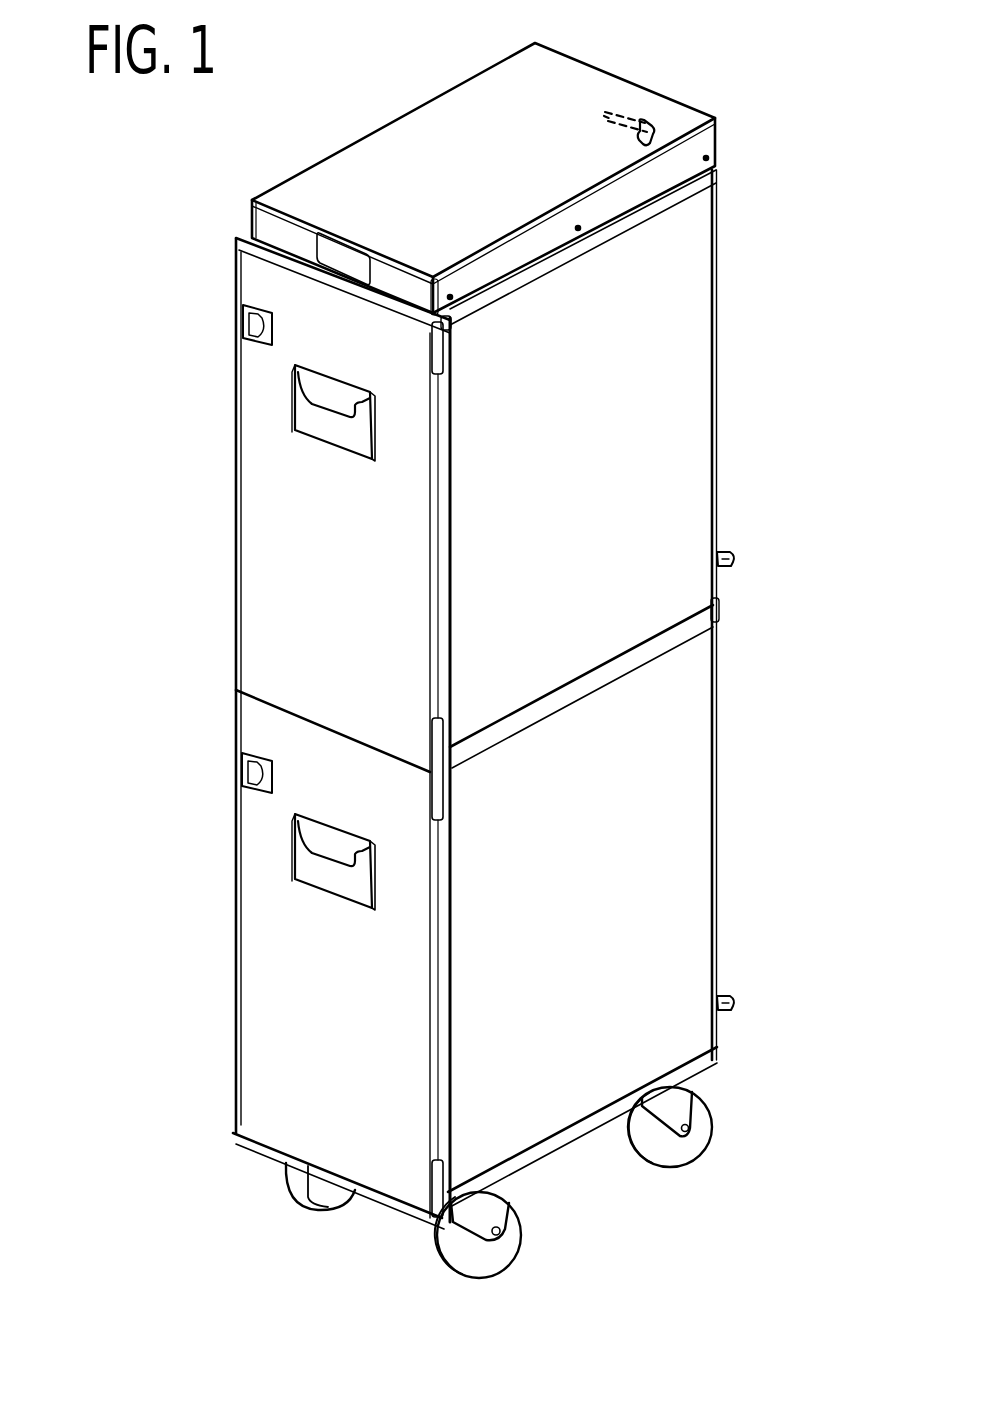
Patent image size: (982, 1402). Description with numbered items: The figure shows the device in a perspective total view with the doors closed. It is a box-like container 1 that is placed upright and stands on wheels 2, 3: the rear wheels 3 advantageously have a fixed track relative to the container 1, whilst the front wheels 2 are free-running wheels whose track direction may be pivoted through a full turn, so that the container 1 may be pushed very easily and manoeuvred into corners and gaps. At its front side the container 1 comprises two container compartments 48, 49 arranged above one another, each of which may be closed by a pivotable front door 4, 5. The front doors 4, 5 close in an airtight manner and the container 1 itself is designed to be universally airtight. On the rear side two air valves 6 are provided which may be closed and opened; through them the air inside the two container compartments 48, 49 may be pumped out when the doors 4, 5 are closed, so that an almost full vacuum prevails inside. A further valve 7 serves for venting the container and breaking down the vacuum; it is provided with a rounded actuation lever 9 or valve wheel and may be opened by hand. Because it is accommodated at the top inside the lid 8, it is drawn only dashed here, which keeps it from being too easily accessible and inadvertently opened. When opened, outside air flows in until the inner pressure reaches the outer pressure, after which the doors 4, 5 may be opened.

The box-like container 1 is at (722, 423).
The front wheels 2 is at (440, 1235).
The rear wheels 3 is at (672, 1152).
The front door 4 is at (277, 604).
The front door 5 is at (177, 967).
The air valve 6 is at (731, 552).
The valve 7 is at (655, 125).
The lid 8 is at (433, 163).
The rounded actuation lever 9 is at (615, 113).
The container compartment 48 is at (204, 461).
The container compartment 49 is at (205, 924).